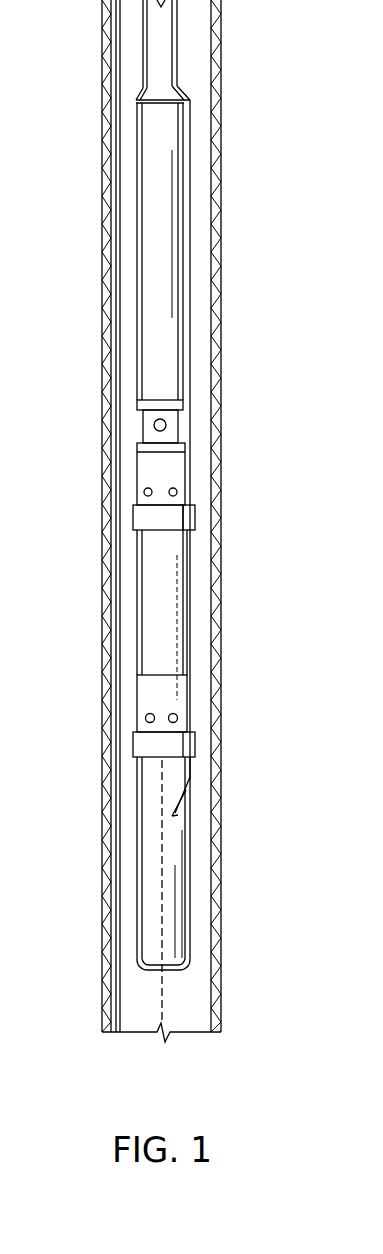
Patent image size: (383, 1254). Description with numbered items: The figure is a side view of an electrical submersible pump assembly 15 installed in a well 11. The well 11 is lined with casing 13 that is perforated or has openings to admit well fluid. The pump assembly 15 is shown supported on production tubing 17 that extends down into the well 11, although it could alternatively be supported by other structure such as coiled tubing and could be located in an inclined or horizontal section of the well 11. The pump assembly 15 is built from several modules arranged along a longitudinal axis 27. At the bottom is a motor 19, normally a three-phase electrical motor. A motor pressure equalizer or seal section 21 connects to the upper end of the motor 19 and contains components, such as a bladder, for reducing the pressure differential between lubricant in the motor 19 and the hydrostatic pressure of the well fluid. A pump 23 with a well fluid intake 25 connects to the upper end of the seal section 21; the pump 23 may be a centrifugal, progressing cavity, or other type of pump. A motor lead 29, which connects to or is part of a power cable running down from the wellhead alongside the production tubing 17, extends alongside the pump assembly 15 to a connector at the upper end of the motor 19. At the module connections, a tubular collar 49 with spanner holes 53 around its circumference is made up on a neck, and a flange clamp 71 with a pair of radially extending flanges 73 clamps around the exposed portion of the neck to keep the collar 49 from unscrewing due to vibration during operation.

The well 11 is at (182, 1010).
The casing 13 is at (221, 265).
The pump assembly 15 is at (238, 341).
The production tubing 17 is at (155, 42).
The motor 19 is at (172, 841).
The seal section 21 is at (158, 602).
The pump 23 is at (158, 370).
The well fluid intake 25 is at (166, 426).
The longitudinal axis 27 is at (163, 918).
The motor lead 29 is at (194, 570).
The collar 49 is at (160, 470).
The spanner holes 53 is at (178, 720).
The flange clamp 71 is at (148, 520).
The flanges 73 is at (192, 518).